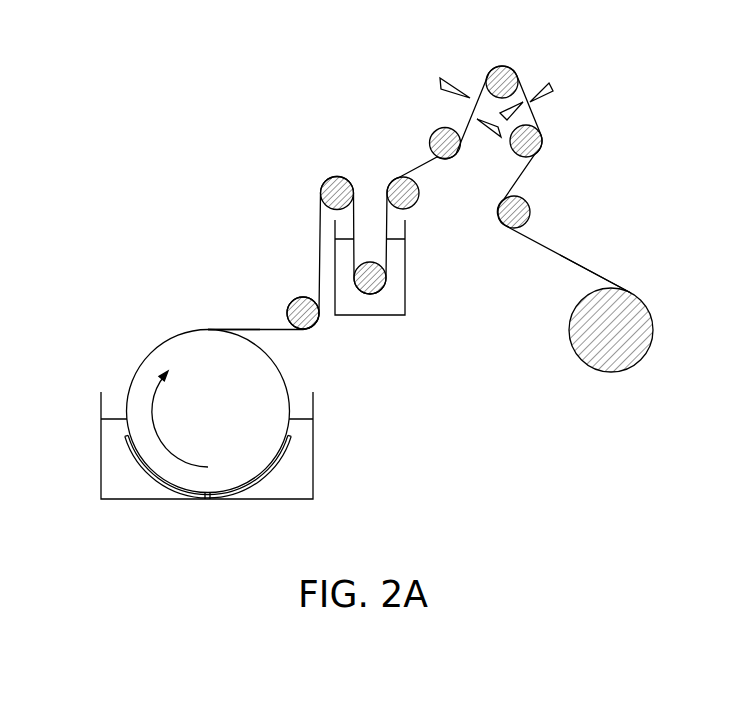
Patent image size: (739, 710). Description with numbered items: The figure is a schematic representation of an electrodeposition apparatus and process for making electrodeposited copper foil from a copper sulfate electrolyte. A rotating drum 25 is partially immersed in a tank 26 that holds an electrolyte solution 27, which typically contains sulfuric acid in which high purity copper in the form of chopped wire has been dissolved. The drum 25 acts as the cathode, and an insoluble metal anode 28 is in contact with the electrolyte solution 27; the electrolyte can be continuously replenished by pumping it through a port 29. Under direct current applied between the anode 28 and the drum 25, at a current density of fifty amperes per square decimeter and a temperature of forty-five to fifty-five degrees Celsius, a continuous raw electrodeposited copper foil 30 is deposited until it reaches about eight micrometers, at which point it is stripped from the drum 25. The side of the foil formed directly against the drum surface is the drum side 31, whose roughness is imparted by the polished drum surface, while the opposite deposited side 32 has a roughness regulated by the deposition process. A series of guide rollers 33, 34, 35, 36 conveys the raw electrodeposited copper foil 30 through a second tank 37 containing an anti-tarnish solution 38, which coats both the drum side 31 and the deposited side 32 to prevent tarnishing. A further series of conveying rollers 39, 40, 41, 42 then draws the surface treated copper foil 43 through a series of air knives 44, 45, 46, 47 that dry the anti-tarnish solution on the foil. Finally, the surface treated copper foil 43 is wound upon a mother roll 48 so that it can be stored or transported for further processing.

The rotating drum 25 is at (160, 344).
The tank 26 is at (100, 446).
The electrolyte solution 27 is at (304, 483).
The insoluble metal anode 28 is at (154, 483).
The port 29 is at (206, 500).
The raw electrodeposited copper foil 30 is at (248, 320).
The drum side 31 is at (224, 332).
The deposited side 32 is at (273, 329).
The guide roller 33 is at (302, 298).
The guide roller 34 is at (336, 177).
The guide roller 35 is at (388, 278).
The guide roller 36 is at (410, 208).
The second tank 37 is at (371, 317).
The anti-tarnish solution 38 is at (389, 305).
The conveying roller 39 is at (434, 128).
The conveying roller 40 is at (502, 65).
The conveying roller 41 is at (538, 115).
The conveying roller 42 is at (531, 212).
The surface treated copper foil 43 is at (603, 260).
The air knife 44 is at (441, 78).
The air knife 45 is at (491, 135).
The air knife 46 is at (522, 103).
The air knife 47 is at (558, 85).
The mother roll 48 is at (643, 328).